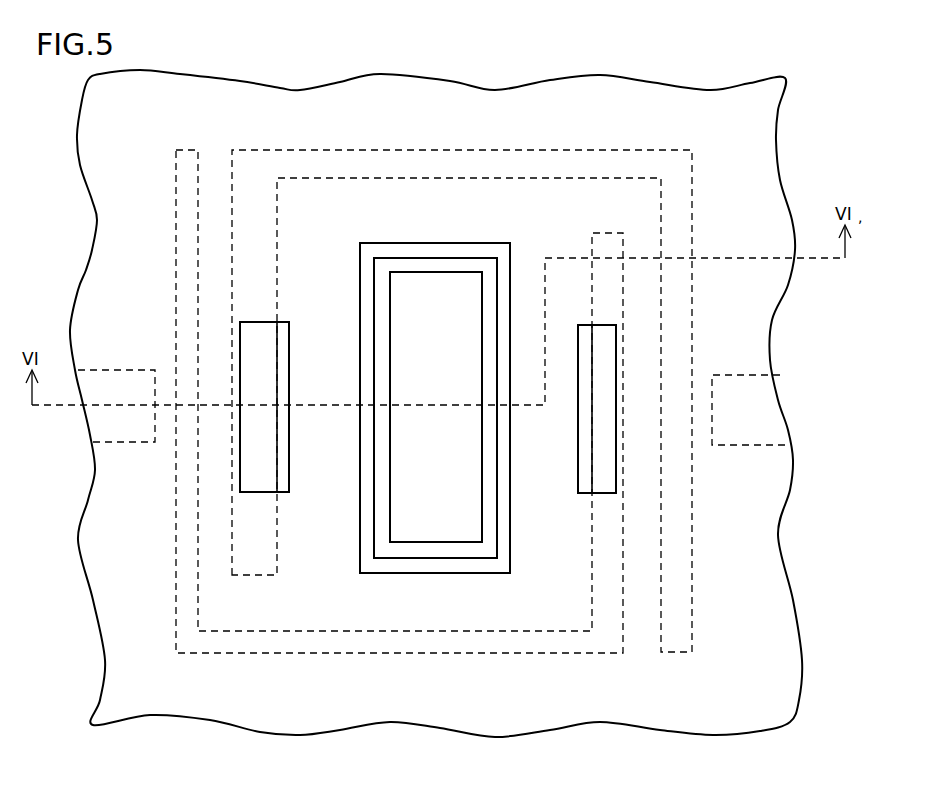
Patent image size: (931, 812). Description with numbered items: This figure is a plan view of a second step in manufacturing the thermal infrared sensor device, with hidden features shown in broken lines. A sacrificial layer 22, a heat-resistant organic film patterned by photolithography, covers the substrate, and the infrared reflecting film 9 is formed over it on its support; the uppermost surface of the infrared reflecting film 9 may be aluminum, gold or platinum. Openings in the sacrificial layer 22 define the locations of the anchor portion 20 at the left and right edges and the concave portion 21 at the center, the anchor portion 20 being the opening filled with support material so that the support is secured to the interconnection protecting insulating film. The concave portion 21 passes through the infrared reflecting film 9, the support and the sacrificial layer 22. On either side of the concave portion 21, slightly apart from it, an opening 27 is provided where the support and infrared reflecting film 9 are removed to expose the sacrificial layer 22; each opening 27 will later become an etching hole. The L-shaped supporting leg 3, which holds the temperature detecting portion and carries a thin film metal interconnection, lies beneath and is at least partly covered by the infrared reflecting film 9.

The supporting leg 3 is at (645, 540).
The infrared reflecting film 9 is at (583, 690).
The anchor portion 20 is at (108, 425).
The concave portion 21 is at (435, 545).
The sacrificial layer 22 is at (485, 565).
The opening 27 is at (258, 492).